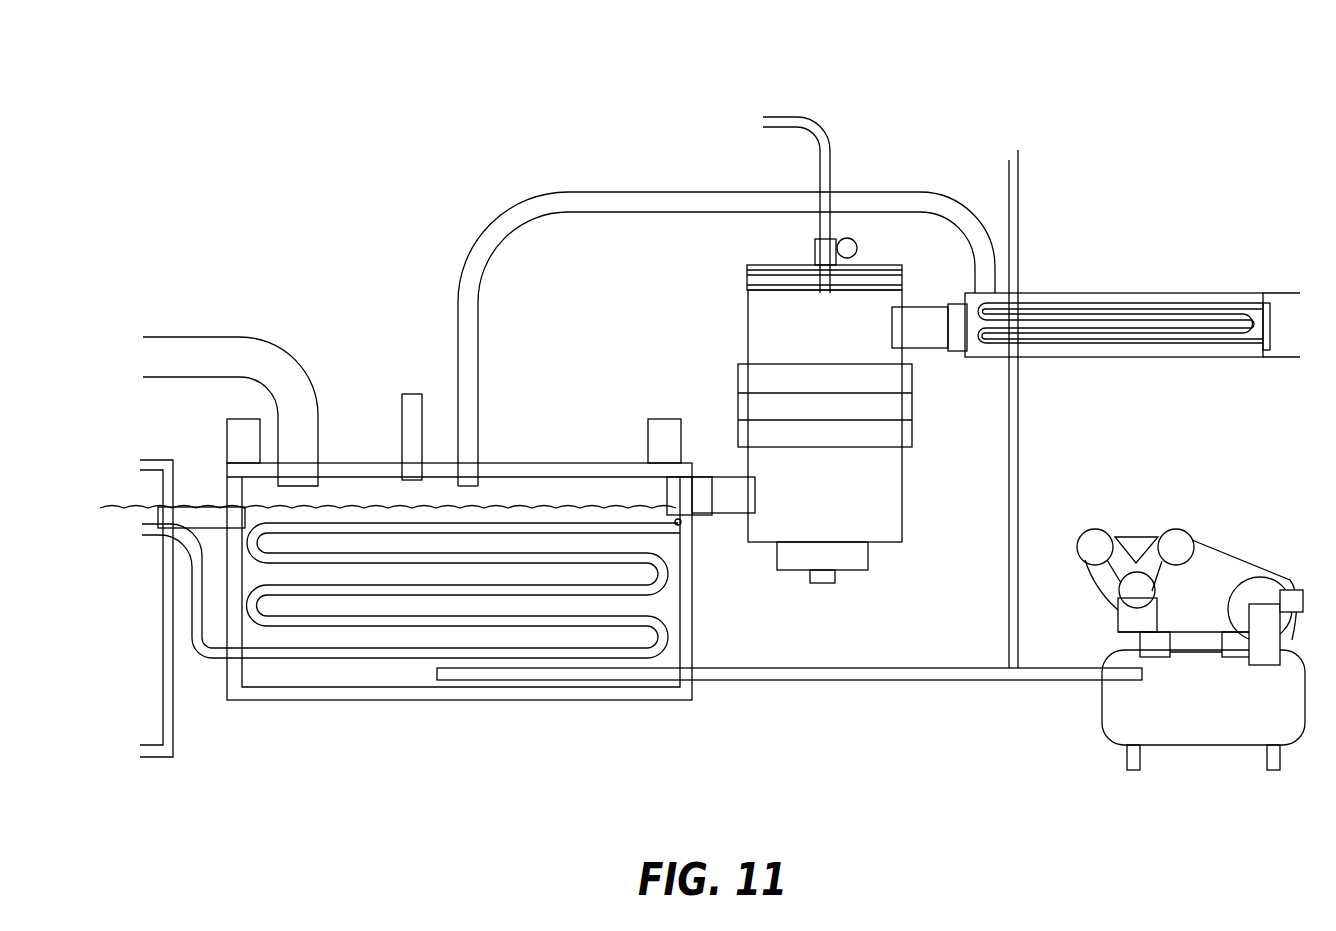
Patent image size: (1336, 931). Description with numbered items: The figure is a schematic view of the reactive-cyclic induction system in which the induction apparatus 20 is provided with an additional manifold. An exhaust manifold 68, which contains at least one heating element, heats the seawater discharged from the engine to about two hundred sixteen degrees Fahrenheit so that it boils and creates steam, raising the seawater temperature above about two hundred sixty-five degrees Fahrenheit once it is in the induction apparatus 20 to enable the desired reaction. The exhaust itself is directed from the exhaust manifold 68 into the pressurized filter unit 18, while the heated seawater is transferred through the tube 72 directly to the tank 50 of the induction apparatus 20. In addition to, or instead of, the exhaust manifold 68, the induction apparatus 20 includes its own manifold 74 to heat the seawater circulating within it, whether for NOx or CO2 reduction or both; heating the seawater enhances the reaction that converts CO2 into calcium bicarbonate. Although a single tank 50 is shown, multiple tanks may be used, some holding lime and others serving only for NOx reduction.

The pressurized filter unit 18 is at (693, 246).
The induction apparatus 20 is at (330, 345).
The tank 50 is at (510, 472).
The exhaust manifold 68 is at (1115, 238).
The tube 72 is at (889, 168).
The manifold 74 is at (320, 718).